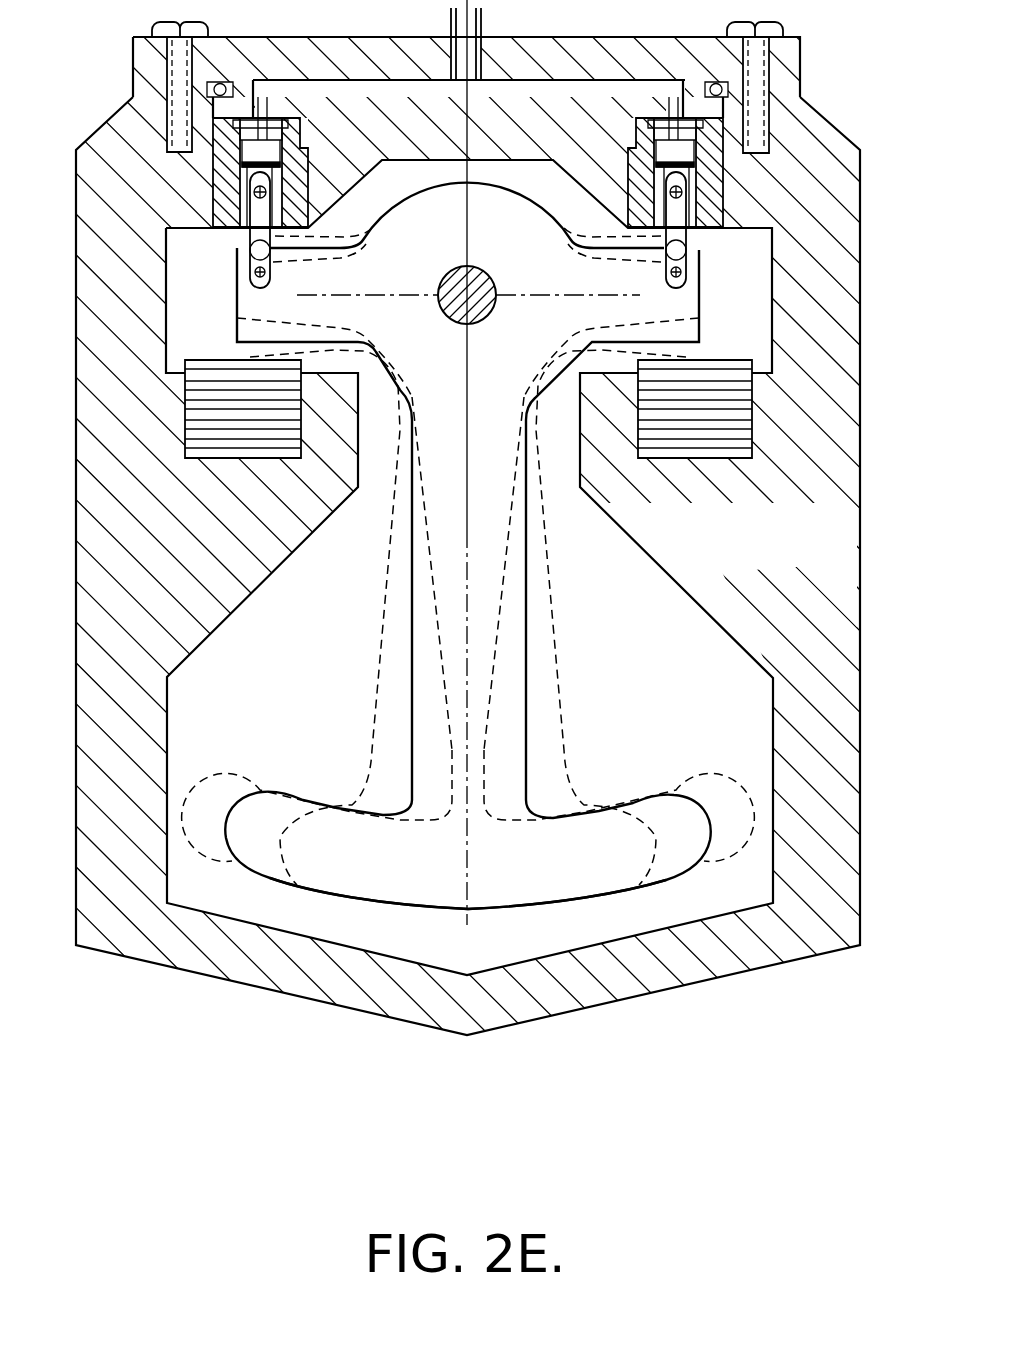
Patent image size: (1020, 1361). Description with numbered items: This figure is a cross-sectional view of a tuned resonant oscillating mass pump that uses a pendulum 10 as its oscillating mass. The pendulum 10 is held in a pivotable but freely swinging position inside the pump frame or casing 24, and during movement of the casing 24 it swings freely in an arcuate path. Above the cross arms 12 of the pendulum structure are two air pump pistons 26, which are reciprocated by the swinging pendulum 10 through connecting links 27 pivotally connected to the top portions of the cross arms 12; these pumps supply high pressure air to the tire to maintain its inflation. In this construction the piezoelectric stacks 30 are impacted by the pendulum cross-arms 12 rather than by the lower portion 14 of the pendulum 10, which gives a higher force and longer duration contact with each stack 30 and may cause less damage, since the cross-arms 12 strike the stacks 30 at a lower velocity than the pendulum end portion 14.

The pendulum 10 is at (590, 650).
The cross arms 12 is at (605, 347).
The lower portion of the pendulum 14 is at (403, 909).
The pump frame or casing 24 is at (860, 534).
The air pump pistons 26 is at (233, 178).
The connecting links 27 is at (690, 222).
The piezoelectric stacks 30 is at (209, 373).